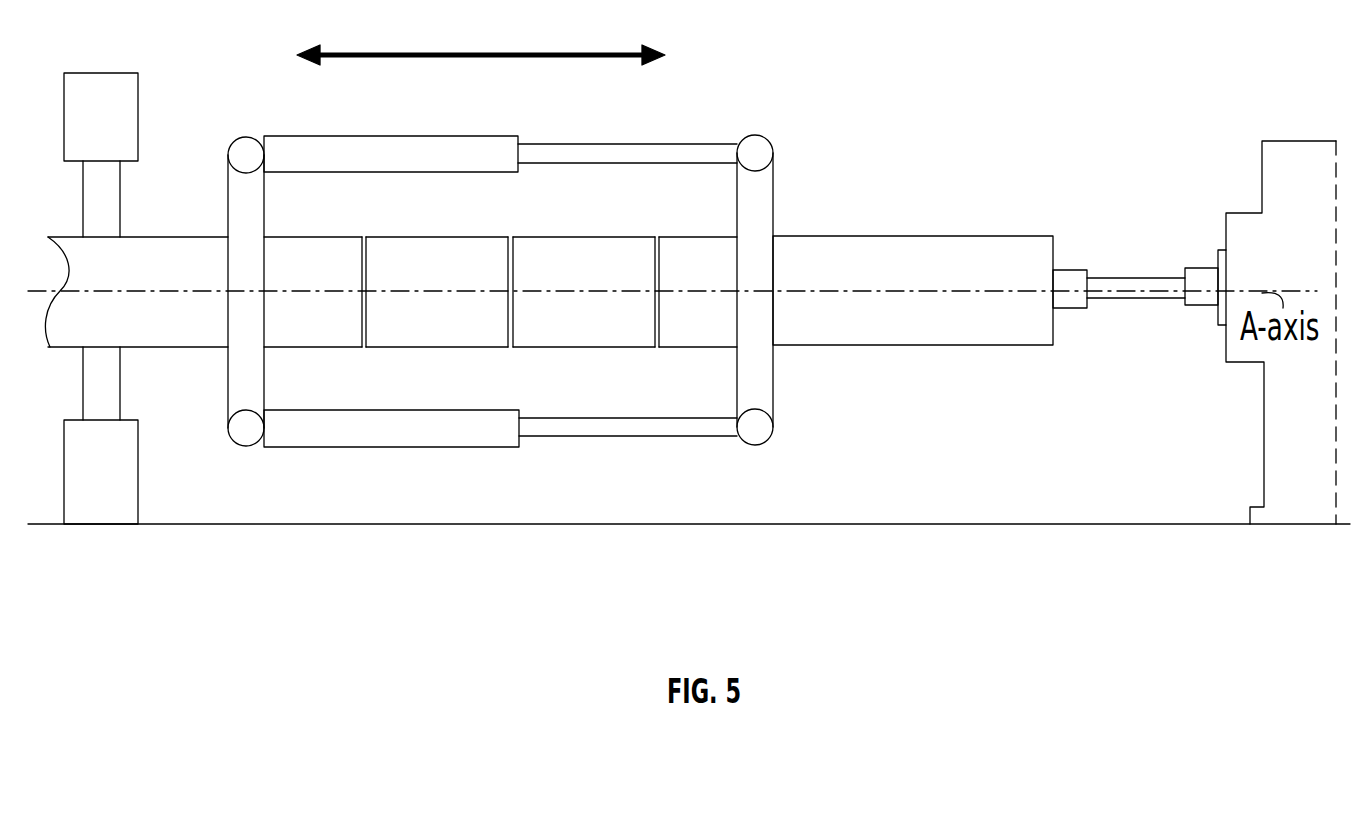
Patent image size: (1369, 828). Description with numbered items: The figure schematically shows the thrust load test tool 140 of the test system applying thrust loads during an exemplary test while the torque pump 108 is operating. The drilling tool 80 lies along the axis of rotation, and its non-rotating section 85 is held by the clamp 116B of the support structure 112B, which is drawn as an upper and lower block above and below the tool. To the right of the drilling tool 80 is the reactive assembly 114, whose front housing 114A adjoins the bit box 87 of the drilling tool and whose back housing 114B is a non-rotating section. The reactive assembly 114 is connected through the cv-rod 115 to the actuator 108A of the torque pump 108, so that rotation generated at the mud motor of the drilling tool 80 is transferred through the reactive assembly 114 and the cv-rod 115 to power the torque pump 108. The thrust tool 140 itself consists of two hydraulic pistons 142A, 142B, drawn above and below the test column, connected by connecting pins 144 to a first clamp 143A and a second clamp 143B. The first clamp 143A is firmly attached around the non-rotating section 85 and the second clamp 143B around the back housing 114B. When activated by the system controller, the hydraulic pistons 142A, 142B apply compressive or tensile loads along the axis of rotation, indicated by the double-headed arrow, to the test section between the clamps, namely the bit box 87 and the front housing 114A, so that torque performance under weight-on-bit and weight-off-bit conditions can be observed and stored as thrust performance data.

The thrust load test tool 140 is at (670, 113).
The non-rotating section 85 is at (203, 348).
The clamp 116B is at (120, 203).
The support structure 112B is at (140, 452).
The drilling tool 80 is at (293, 227).
The bit box 87 is at (422, 362).
The front housing 114A is at (598, 368).
The reactive assembly 114 is at (692, 369).
The back housing 114B is at (863, 235).
The first clamp 143A is at (265, 372).
The second clamp 143B is at (775, 387).
The hydraulic piston 142A is at (357, 131).
The hydraulic piston 142B is at (403, 447).
The connecting pins 144 is at (758, 138).
The cv-rod 115 is at (1117, 300).
The actuator 108A is at (1175, 362).
The torque pump 108 is at (1320, 487).